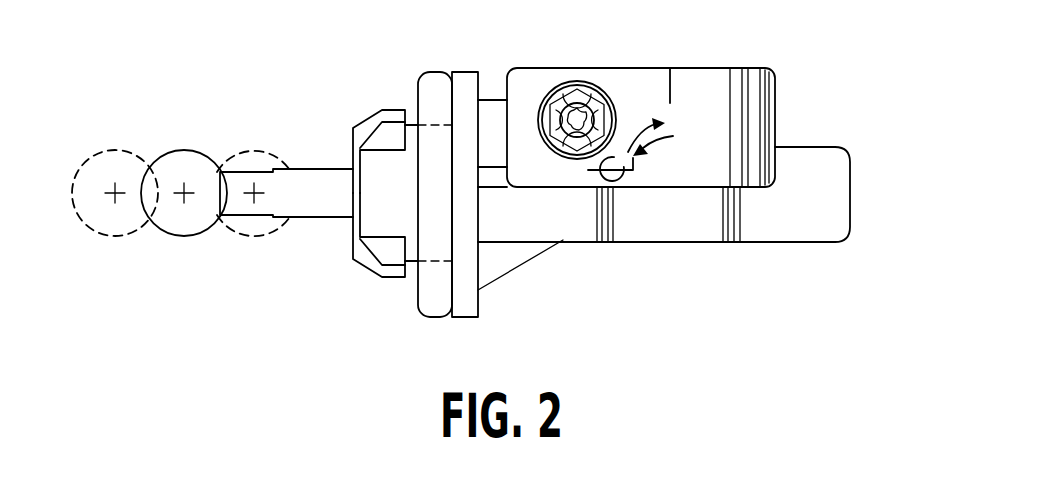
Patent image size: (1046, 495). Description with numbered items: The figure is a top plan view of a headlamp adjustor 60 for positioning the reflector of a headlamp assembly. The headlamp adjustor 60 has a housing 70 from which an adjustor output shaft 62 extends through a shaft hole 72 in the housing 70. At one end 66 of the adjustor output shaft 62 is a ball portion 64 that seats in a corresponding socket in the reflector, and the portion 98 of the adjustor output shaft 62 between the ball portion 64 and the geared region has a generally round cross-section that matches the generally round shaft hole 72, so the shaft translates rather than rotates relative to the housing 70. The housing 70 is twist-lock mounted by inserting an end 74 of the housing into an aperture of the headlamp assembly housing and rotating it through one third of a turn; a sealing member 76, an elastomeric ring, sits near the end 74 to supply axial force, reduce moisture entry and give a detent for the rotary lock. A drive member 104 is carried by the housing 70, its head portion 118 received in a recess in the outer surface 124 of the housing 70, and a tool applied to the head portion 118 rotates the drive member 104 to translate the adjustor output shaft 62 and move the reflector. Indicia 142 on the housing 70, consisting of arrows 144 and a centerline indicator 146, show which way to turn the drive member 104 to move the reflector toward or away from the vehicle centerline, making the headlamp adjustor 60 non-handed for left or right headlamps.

The headlamp adjustor 60 is at (784, 341).
The adjustor output shaft 62 is at (315, 160).
The ball portion 64 is at (193, 220).
The end 66 is at (142, 197).
The portion of the adjustor output shaft 98 is at (320, 217).
The housing 70 is at (550, 229).
The shaft hole 72 is at (353, 215).
The end of the housing 74 is at (353, 148).
The sealing member 76 is at (438, 85).
The drive member 104 is at (608, 76).
The head portion 118 is at (563, 88).
The outer surface 124 is at (703, 90).
The indicia 142 is at (670, 164).
The arrows 144 is at (697, 117).
The centerline indicator 146 is at (639, 200).